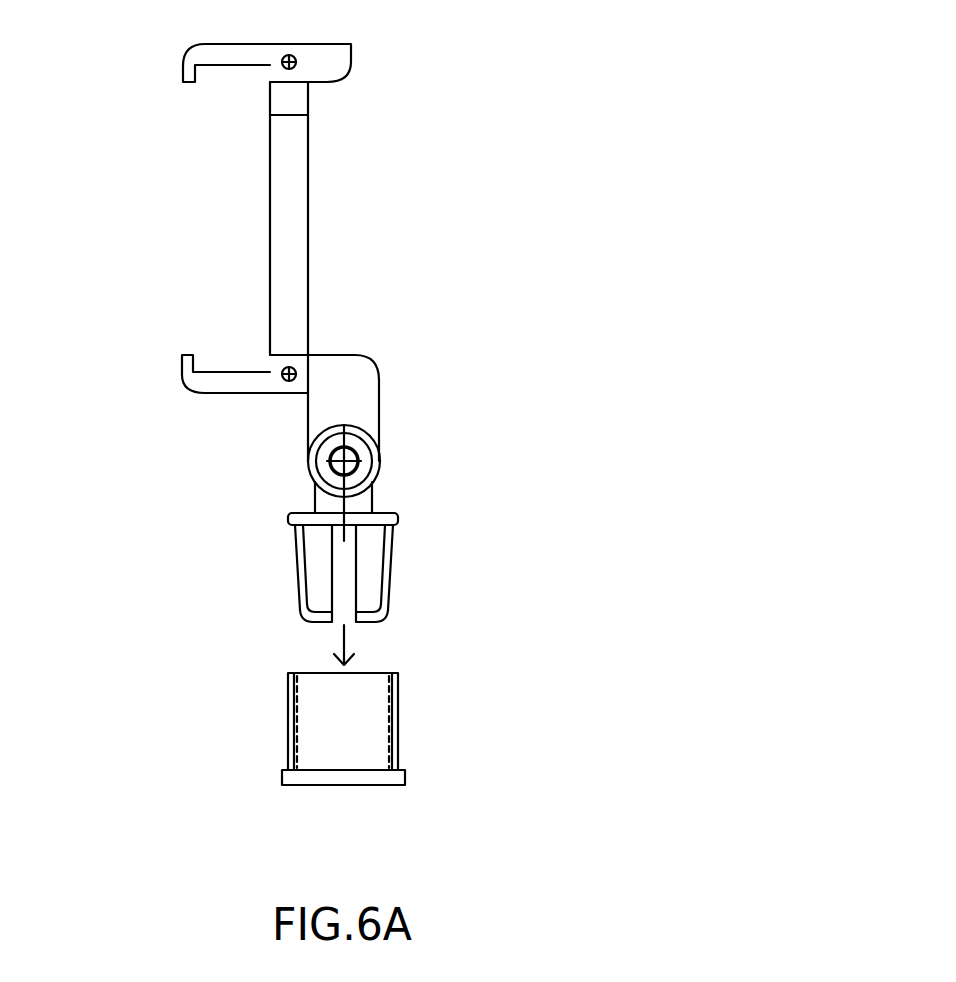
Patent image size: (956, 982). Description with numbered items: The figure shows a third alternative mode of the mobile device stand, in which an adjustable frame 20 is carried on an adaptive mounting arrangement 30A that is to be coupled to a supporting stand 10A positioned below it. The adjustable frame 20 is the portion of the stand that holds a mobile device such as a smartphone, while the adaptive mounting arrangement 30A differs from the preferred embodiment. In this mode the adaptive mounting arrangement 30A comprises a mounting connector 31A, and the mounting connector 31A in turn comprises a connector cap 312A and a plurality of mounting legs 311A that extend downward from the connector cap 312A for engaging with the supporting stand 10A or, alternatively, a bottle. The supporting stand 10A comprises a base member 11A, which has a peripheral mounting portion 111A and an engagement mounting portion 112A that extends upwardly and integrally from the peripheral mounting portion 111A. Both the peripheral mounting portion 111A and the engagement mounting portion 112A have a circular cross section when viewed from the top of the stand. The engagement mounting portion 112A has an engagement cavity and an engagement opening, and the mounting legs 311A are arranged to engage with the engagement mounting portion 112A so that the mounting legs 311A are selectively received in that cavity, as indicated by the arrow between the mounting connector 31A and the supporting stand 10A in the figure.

The adjustable frame 20 is at (378, 98).
The adaptive mounting arrangement 30A is at (355, 486).
The mounting connector 31A is at (427, 506).
The mounting legs 311A is at (318, 567).
The connector cap 312A is at (387, 512).
The supporting stand 10A is at (379, 751).
The base member 11A is at (330, 730).
The peripheral mounting portion 111A is at (282, 783).
The engagement mounting portion 112A is at (370, 733).